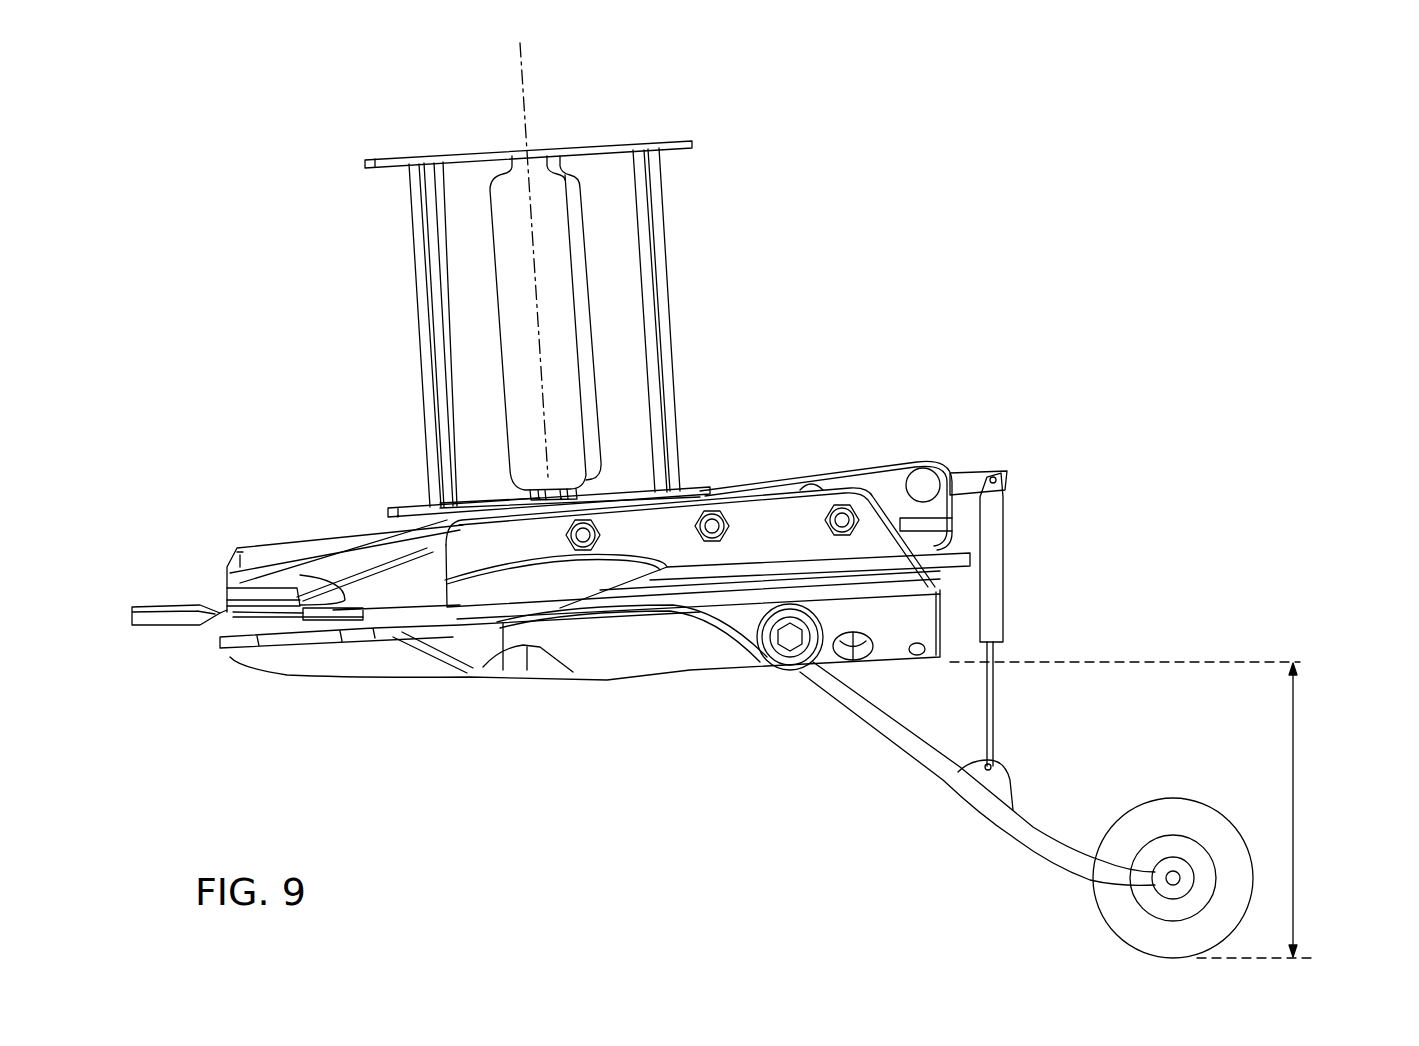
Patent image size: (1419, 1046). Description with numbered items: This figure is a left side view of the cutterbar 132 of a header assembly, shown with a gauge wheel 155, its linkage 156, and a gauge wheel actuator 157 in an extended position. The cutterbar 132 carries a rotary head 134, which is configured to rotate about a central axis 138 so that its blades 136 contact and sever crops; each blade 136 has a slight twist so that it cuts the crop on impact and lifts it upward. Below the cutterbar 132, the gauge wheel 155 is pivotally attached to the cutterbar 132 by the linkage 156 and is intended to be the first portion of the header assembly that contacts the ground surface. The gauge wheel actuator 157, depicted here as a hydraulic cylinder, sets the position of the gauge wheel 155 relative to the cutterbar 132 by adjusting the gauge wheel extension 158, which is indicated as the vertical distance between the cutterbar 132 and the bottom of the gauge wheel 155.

The central axis 138 is at (523, 90).
The blade 136 is at (163, 613).
The cutterbar 132 is at (752, 490).
The rotary head 134 is at (822, 482).
The gauge wheel actuator 157 is at (1003, 575).
The linkage 156 is at (907, 750).
The gauge wheel 155 is at (1173, 813).
The gauge wheel extension 158 is at (1293, 803).